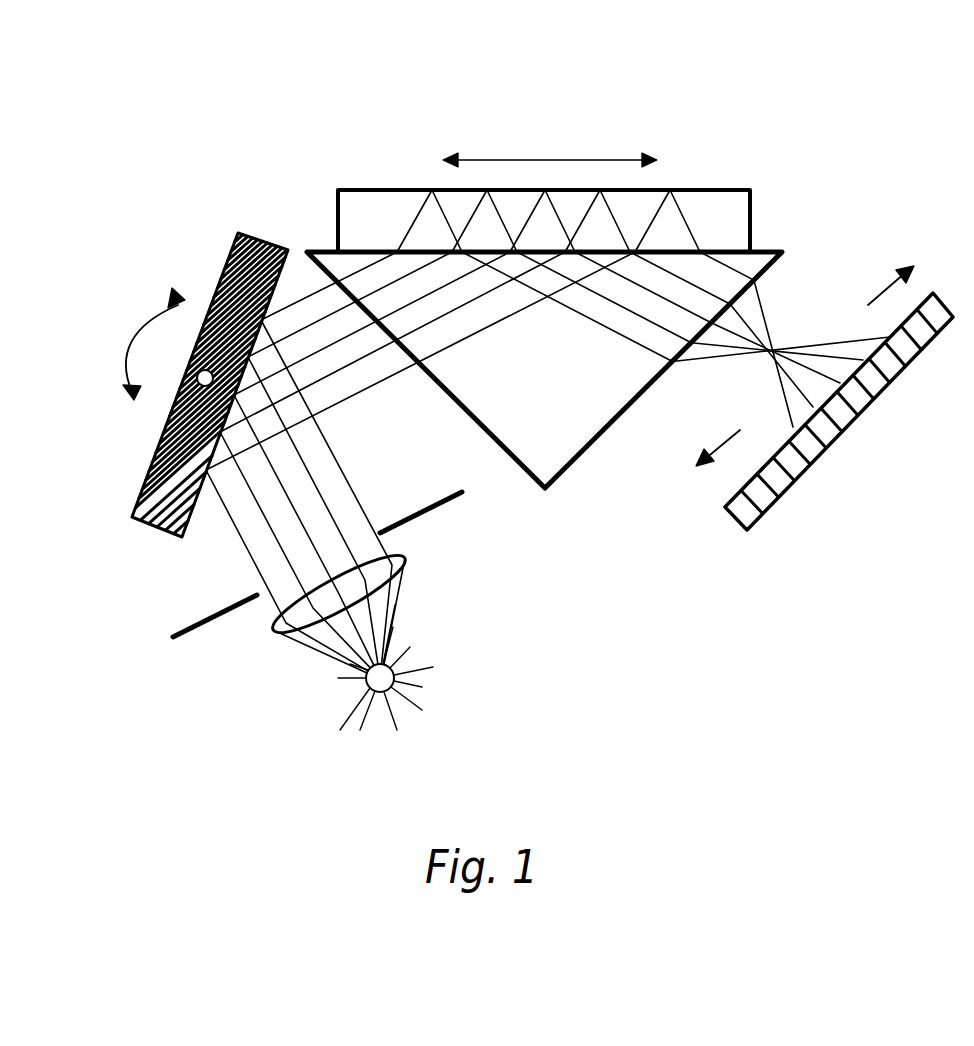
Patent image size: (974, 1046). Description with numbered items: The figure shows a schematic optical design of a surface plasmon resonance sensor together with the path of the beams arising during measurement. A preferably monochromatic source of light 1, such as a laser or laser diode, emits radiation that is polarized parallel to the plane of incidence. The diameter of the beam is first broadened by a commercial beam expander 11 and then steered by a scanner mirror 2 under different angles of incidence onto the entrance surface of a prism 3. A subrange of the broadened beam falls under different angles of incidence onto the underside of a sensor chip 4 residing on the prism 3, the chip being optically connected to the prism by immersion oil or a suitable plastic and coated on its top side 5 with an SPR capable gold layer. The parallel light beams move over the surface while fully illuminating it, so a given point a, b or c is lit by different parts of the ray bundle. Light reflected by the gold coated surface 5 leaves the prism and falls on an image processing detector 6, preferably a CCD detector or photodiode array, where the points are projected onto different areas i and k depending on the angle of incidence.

The source of light 1 is at (340, 709).
The scanner mirror 2 is at (207, 313).
The prism 3 is at (545, 490).
The sensor chip 4 is at (338, 222).
The top side of sensor chip 5 is at (668, 190).
The image processing detector 6 is at (812, 465).
The beam expander 11 is at (293, 635).